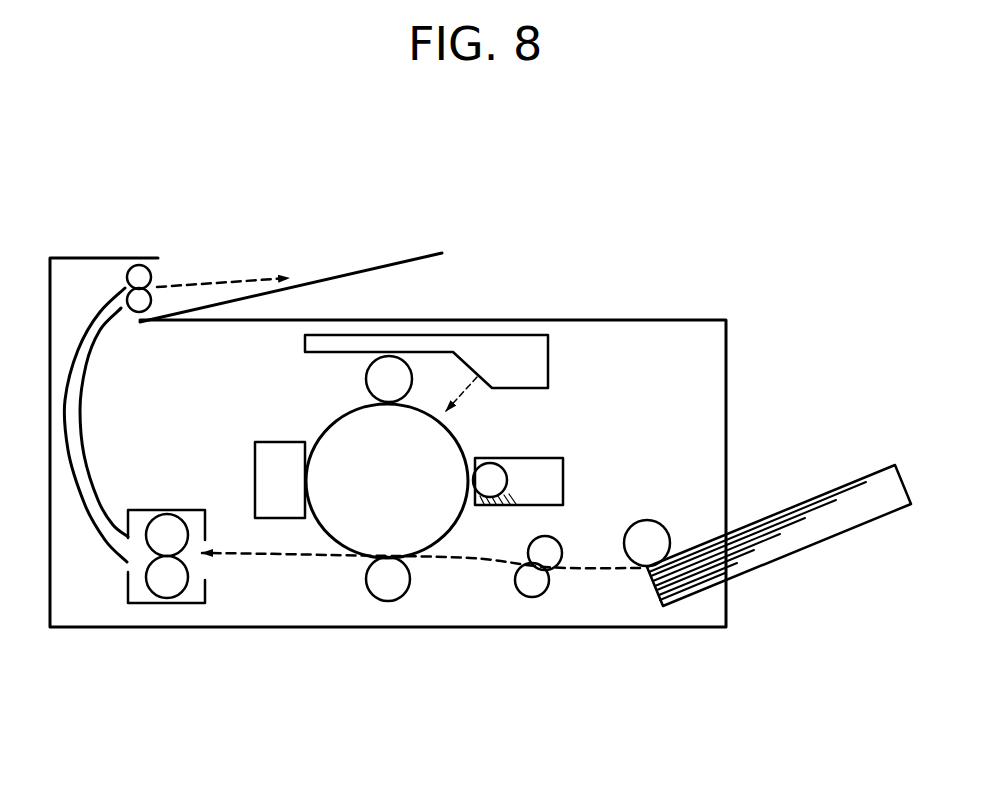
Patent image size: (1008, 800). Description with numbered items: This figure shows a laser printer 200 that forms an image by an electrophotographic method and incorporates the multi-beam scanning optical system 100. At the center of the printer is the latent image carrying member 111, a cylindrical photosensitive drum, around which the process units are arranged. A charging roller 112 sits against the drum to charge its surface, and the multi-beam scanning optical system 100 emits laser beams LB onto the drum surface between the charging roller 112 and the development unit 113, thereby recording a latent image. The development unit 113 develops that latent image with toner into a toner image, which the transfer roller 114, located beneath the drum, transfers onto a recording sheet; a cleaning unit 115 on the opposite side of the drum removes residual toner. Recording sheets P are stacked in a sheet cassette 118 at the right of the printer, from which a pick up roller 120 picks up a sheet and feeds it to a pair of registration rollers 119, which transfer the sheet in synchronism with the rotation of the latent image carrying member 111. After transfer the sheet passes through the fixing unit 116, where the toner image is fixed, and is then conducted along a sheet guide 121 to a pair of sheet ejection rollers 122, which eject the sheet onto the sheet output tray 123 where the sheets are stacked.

The laser printer 200 is at (723, 298).
The multi-beam scanning optical system 100 is at (546, 352).
The laser beams LB is at (463, 392).
The latent image carrying member 111 is at (327, 552).
The charging roller 112 is at (368, 381).
The development unit 113 is at (562, 482).
The transfer roller 114 is at (402, 580).
The cleaning unit 115 is at (277, 453).
The fixing unit 116 is at (205, 583).
The sheet cassette 118 is at (779, 538).
The recording paper P is at (800, 510).
The pair of registration rollers 119 is at (560, 556).
The pick up roller 120 is at (627, 532).
The sheet guide 121 is at (83, 433).
The pair of sheet ejection rollers 122 is at (124, 303).
The sheet output tray 123 is at (352, 273).